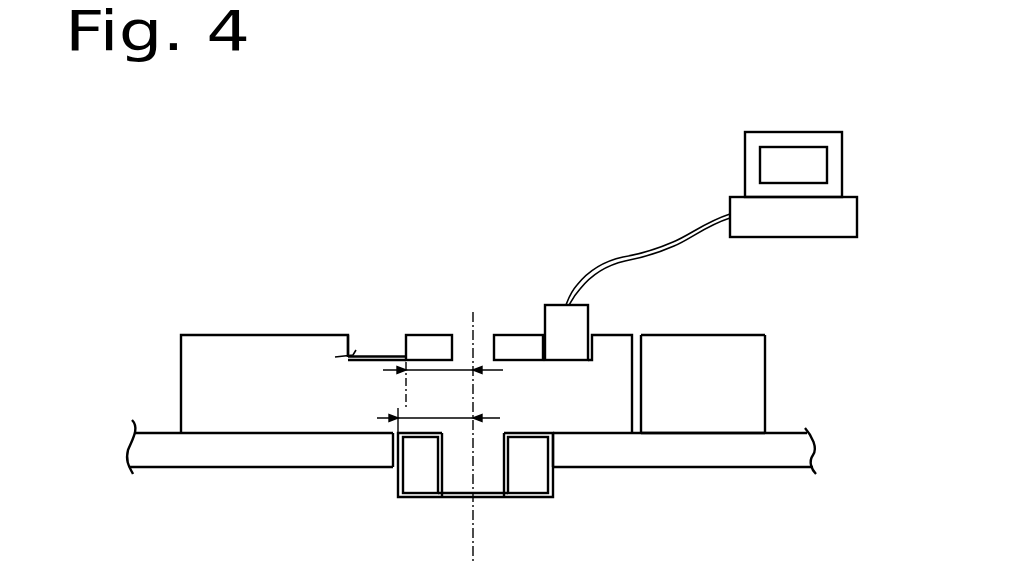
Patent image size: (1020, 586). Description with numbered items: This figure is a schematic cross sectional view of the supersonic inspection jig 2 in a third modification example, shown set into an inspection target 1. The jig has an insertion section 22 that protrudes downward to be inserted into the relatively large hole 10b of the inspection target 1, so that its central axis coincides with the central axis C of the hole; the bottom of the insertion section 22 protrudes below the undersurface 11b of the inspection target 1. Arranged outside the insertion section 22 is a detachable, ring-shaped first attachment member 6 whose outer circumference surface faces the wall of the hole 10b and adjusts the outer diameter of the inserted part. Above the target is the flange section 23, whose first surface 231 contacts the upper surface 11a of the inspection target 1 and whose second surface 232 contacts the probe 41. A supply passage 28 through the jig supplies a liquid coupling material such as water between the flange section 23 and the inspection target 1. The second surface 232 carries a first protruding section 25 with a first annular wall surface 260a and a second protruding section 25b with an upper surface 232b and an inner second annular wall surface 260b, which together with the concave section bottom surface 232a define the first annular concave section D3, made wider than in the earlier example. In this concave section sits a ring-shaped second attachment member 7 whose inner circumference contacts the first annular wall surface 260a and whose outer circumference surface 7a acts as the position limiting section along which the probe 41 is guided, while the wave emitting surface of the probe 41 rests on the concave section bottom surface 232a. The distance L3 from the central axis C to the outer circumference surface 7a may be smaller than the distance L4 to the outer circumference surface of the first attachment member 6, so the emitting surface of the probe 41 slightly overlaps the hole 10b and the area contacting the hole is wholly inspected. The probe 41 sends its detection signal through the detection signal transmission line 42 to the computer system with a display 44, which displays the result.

The inspection target 1 is at (716, 465).
The supersonic inspection jig 2 is at (707, 398).
The first attachment member 6 is at (405, 487).
The second attachment member 7 is at (479, 295).
The outer circumference surface 7a is at (405, 337).
The hole 10b is at (553, 458).
The upper surface 11a is at (793, 433).
The undersurface 11b is at (762, 467).
The insertion section 22 is at (462, 495).
The flange section 23 is at (758, 395).
The first protruding section 25 is at (495, 334).
The second protruding section 25b is at (713, 342).
The supply passage 28 is at (637, 425).
The probe 41 is at (577, 319).
The detection signal transmission line 42 is at (672, 243).
The computer system with a display 44 is at (798, 138).
The first surface 231 is at (252, 433).
The second surface 232 is at (211, 383).
The concave section bottom surface 232a is at (372, 363).
The upper surface 232b is at (200, 334).
The first annular wall surface 260a is at (447, 343).
The second annular wall surface 260b is at (353, 350).
The central axis C is at (472, 420).
The first annular concave section D3 is at (331, 357).
The distance L3 is at (443, 384).
The distance L4 is at (424, 417).